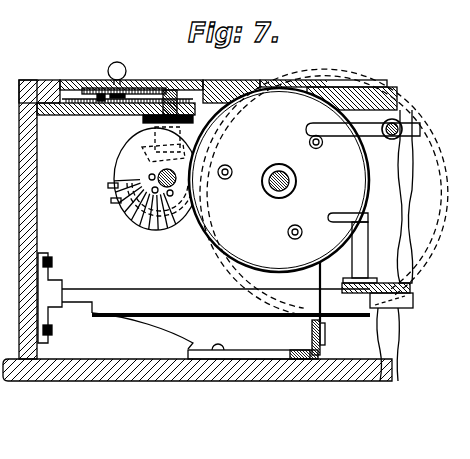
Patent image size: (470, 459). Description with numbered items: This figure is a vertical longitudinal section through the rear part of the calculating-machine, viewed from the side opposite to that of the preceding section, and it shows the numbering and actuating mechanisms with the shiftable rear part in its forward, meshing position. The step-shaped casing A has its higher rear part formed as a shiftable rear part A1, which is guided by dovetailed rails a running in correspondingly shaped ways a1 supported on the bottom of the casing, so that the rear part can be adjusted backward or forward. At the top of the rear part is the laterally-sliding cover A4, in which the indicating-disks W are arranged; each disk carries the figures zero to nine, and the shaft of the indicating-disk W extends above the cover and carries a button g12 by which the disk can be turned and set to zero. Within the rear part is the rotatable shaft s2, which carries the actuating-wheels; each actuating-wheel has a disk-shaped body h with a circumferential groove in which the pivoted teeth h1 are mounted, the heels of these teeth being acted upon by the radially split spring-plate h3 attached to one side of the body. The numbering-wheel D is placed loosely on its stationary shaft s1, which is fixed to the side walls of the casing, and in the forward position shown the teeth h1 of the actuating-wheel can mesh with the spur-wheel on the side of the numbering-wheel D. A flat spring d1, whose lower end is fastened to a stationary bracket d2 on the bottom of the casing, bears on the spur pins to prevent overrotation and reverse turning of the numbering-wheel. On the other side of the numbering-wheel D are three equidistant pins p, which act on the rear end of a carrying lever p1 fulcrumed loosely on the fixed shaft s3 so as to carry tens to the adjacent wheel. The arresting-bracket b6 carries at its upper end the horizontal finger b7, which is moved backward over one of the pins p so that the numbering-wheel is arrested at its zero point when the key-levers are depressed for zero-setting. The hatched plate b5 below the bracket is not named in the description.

The casing A is at (211, 246).
The shiftable rear part of the casing A1 is at (18, 219).
The laterally-sliding cover A4 is at (111, 81).
The button g12 is at (118, 62).
The indicating-disk W is at (148, 88).
The disk-shaped body h is at (152, 179).
The teeth h1 is at (108, 186).
The spring-plate h3 is at (143, 225).
The shaft s2 is at (167, 172).
The numbering-wheel D is at (318, 192).
The shaft s1 is at (279, 171).
The pin p is at (317, 148).
The lever p1 is at (358, 136).
The fixed shaft s3 is at (394, 140).
The horizontal finger b7 is at (338, 219).
The arresting-bracket b6 is at (368, 250).
The bracket plate b5 is at (411, 288).
The dovetailed rail a is at (204, 298).
The way a1 is at (382, 324).
The flat spring d1 is at (308, 292).
The stationary bracket d2 is at (311, 341).